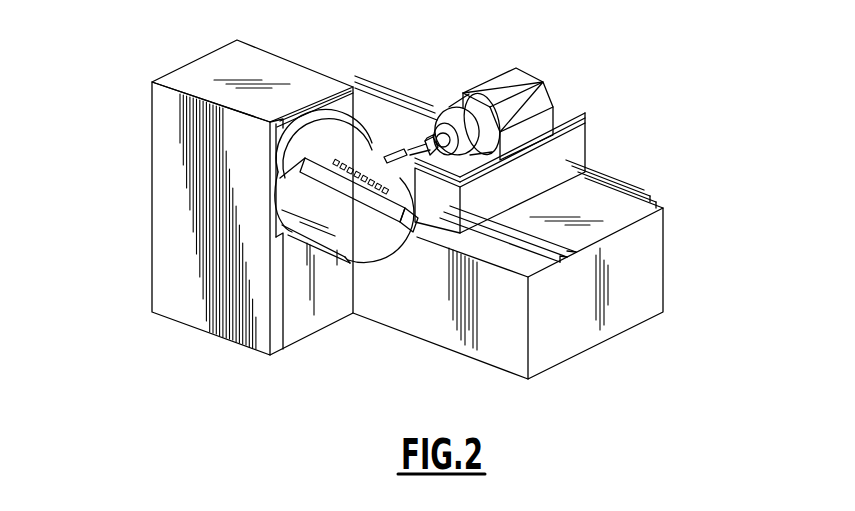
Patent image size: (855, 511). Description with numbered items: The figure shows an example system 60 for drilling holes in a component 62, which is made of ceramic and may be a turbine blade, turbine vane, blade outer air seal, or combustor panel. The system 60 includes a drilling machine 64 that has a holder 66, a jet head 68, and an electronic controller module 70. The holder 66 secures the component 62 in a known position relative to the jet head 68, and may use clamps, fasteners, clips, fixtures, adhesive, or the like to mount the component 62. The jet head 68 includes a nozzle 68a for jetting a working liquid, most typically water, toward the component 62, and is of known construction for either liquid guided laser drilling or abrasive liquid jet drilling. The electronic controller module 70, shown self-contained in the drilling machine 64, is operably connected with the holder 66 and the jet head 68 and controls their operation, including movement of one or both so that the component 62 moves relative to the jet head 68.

The system 60 is at (114, 292).
The component 62 is at (386, 141).
The drilling machine 64 is at (692, 326).
The holder 66 is at (403, 202).
The jet head 68 is at (438, 122).
The nozzle 68a is at (415, 168).
The electronic controller module 70 is at (164, 116).